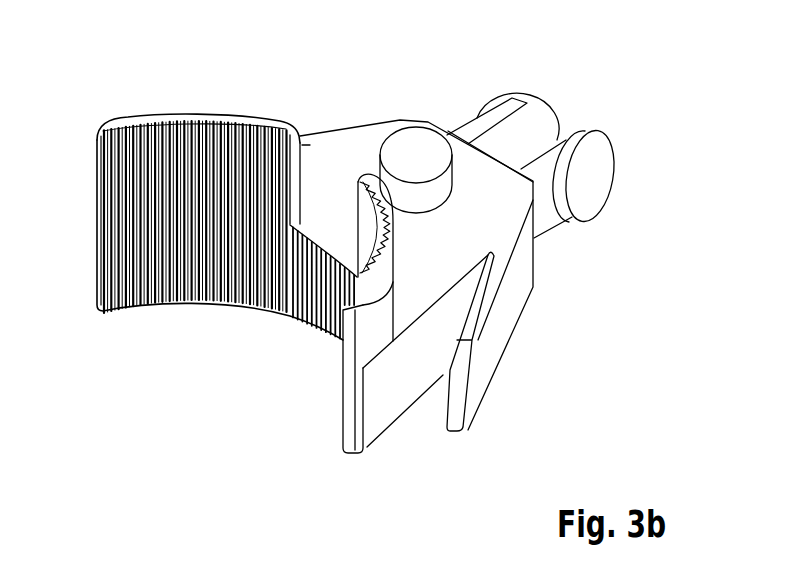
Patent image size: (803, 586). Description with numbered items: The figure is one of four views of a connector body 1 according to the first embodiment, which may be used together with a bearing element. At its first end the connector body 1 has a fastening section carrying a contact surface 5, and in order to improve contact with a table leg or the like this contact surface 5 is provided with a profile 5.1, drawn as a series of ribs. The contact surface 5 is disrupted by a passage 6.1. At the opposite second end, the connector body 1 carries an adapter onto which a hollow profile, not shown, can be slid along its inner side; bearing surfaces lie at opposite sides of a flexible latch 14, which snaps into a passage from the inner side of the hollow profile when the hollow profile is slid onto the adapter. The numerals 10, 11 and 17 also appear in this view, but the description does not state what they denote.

The connector body 1 is at (270, 73).
The contact surface 5 is at (102, 206).
The profile 5.1 is at (147, 290).
The passage 6.1 is at (343, 212).
The plate 10 is at (410, 407).
The plate 11 is at (405, 396).
The flexible latch 14 is at (597, 182).
The cylindrical boss 17 is at (422, 145).